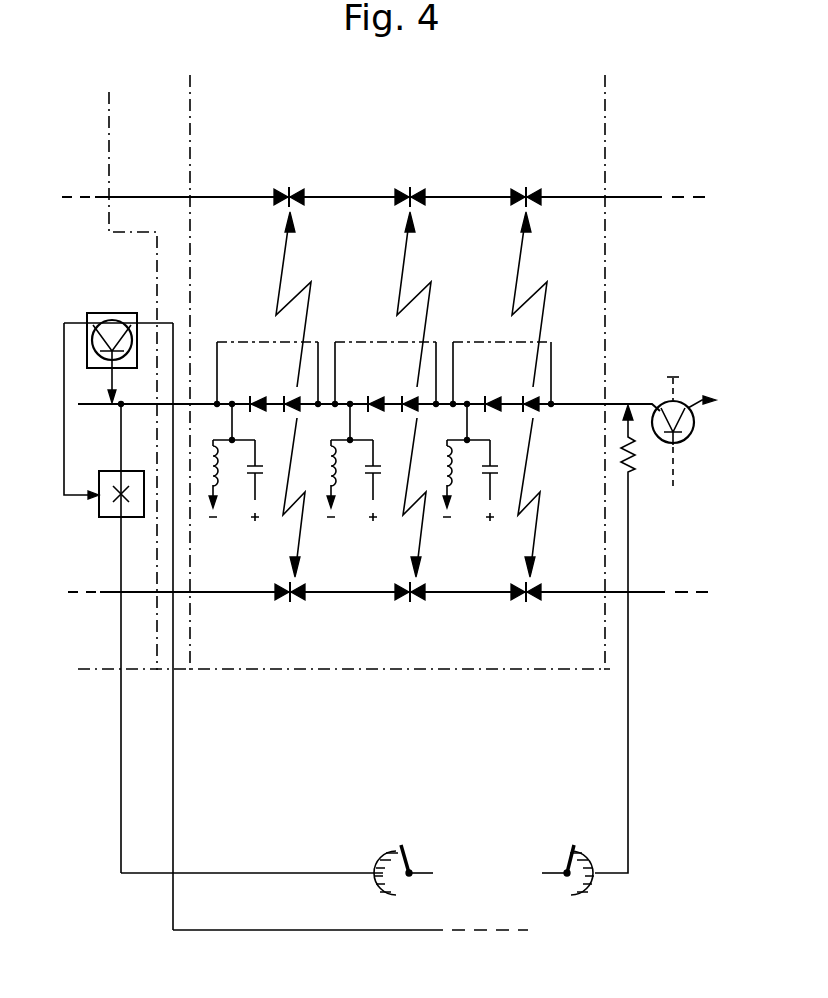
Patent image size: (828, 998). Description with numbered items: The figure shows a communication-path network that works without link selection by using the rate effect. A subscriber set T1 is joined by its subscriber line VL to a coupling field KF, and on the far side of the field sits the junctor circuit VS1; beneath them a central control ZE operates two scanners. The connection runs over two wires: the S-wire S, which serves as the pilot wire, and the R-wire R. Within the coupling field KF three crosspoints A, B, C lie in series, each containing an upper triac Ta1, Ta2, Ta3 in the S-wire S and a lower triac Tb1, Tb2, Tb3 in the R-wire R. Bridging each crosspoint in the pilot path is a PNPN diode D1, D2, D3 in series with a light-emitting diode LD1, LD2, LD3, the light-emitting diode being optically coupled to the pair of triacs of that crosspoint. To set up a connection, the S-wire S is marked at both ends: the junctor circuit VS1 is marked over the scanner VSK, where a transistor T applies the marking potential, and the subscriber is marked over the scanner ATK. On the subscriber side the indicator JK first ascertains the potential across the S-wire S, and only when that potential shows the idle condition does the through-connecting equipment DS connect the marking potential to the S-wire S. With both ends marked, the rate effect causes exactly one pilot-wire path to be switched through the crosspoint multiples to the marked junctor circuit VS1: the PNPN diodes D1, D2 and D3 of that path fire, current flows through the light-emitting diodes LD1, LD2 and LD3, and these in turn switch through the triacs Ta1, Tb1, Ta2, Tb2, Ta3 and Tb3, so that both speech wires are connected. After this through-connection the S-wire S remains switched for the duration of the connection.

The subscriber set T1 is at (109, 372).
The subscriber line VL is at (159, 372).
The coupling field KF is at (344, 371).
The junctor circuit VS1 is at (648, 372).
The central control ZE is at (324, 824).
The S-wire S is at (582, 196).
The R-wire R is at (569, 596).
The crosspoint A is at (293, 257).
The crosspoint B is at (414, 257).
The crosspoint C is at (529, 257).
The triac Ta1 is at (288, 183).
The triac Ta2 is at (409, 183).
The triac Ta3 is at (525, 183).
The triac Tb1 is at (290, 524).
The triac Tb2 is at (410, 524).
The triac Tb3 is at (526, 524).
The PNPN diode D1 is at (263, 431).
The light-emitting diode LD1 is at (292, 393).
The PNPN diode D2 is at (381, 431).
The light-emitting diode LD2 is at (410, 393).
The PNPN diode D3 is at (497, 431).
The light-emitting diode LD3 is at (527, 393).
The indicator JK is at (118, 394).
The through-connecting equipment DS is at (130, 626).
The transistor T is at (655, 625).
The scanner ATK is at (403, 857).
The scanner VSK is at (568, 857).